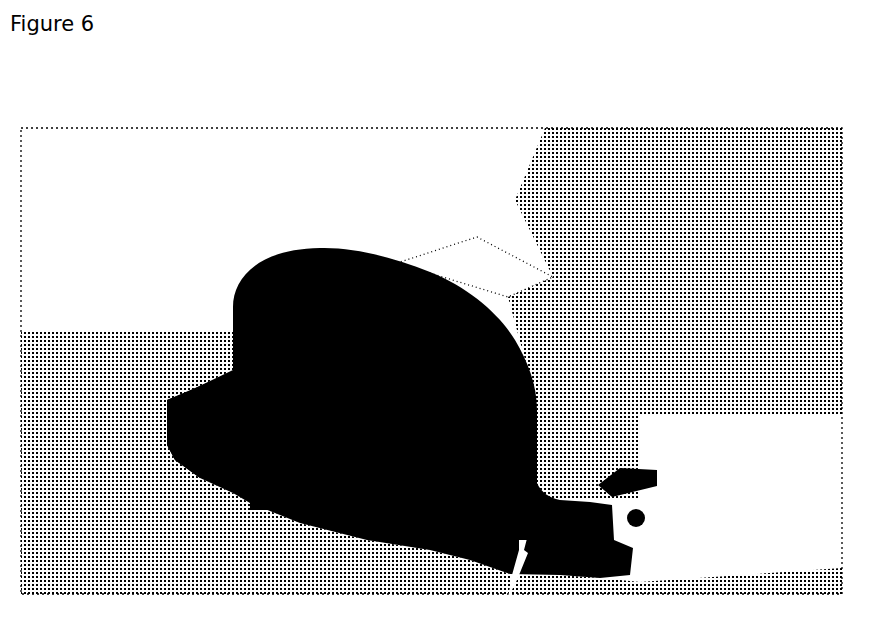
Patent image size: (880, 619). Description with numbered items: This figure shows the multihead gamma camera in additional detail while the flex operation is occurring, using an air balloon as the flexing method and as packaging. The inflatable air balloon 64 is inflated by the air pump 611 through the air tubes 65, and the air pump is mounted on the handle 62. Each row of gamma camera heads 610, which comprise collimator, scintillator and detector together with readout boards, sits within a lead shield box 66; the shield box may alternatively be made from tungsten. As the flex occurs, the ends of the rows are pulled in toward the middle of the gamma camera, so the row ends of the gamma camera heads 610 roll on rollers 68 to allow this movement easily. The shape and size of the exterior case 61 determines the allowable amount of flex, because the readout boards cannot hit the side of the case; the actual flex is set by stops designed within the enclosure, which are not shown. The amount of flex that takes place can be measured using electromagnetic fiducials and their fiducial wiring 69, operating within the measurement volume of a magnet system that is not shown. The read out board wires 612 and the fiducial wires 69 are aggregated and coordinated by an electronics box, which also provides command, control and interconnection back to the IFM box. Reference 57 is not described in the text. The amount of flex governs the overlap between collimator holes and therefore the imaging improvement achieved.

The exterior case 61 is at (477, 240).
The side face 57 is at (531, 368).
The gamma camera heads 610 is at (537, 425).
The air pump 611 is at (645, 516).
The read out board wires 612 is at (233, 315).
The handle 62 is at (173, 470).
The fiducial wiring 69 is at (207, 478).
The inflatable air balloon 64 is at (280, 499).
The rollers 68 is at (363, 527).
The lead shield box 66 is at (420, 537).
The air tubes 65 is at (478, 553).